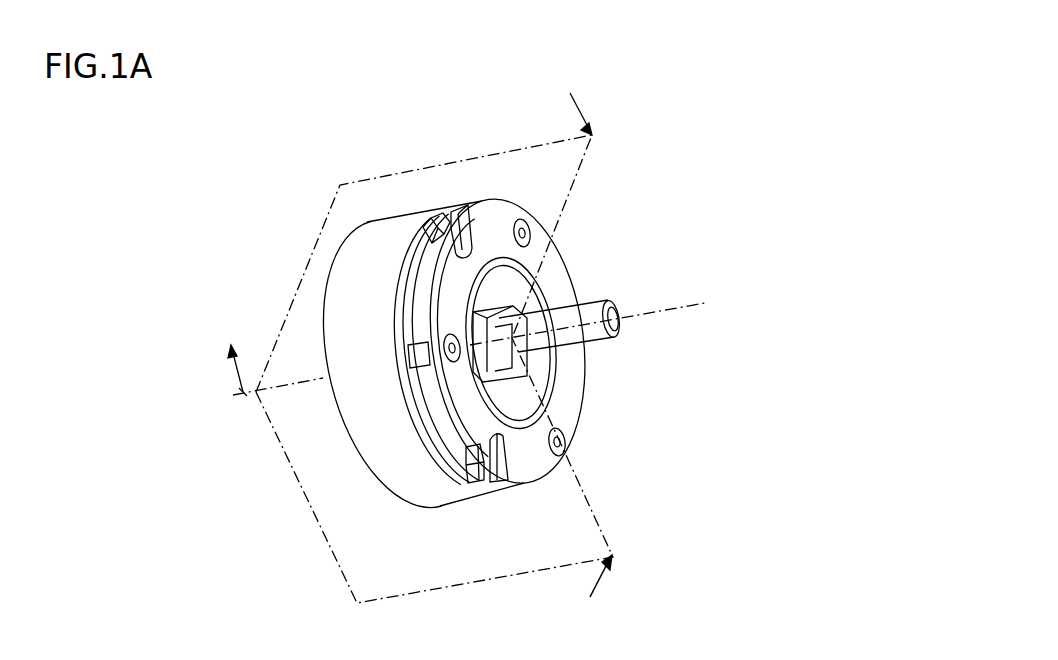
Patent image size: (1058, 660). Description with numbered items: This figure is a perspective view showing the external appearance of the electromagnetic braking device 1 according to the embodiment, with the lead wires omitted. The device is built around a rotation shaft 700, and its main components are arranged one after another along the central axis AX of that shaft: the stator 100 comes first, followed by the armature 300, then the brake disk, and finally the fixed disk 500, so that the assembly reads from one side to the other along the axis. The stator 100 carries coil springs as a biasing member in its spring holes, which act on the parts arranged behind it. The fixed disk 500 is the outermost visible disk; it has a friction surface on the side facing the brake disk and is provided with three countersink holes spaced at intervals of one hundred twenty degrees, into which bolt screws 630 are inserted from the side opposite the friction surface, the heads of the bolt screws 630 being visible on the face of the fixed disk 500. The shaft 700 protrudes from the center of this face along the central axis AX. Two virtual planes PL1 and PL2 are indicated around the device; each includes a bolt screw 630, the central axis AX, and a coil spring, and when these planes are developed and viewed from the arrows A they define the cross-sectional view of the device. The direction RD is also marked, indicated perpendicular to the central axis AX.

The electromagnetic braking device 1 is at (724, 92).
The stator 100 is at (388, 210).
The armature 300 is at (433, 212).
The fixed disk 500 is at (470, 204).
The shaft 700 is at (587, 305).
The bolt screw 630 is at (572, 440).
The virtual plane PL1 is at (343, 582).
The virtual plane PL2 is at (335, 193).
The central axis AX is at (453, 356).
The radial direction RD is at (229, 357).
The arrows A is at (586, 343).